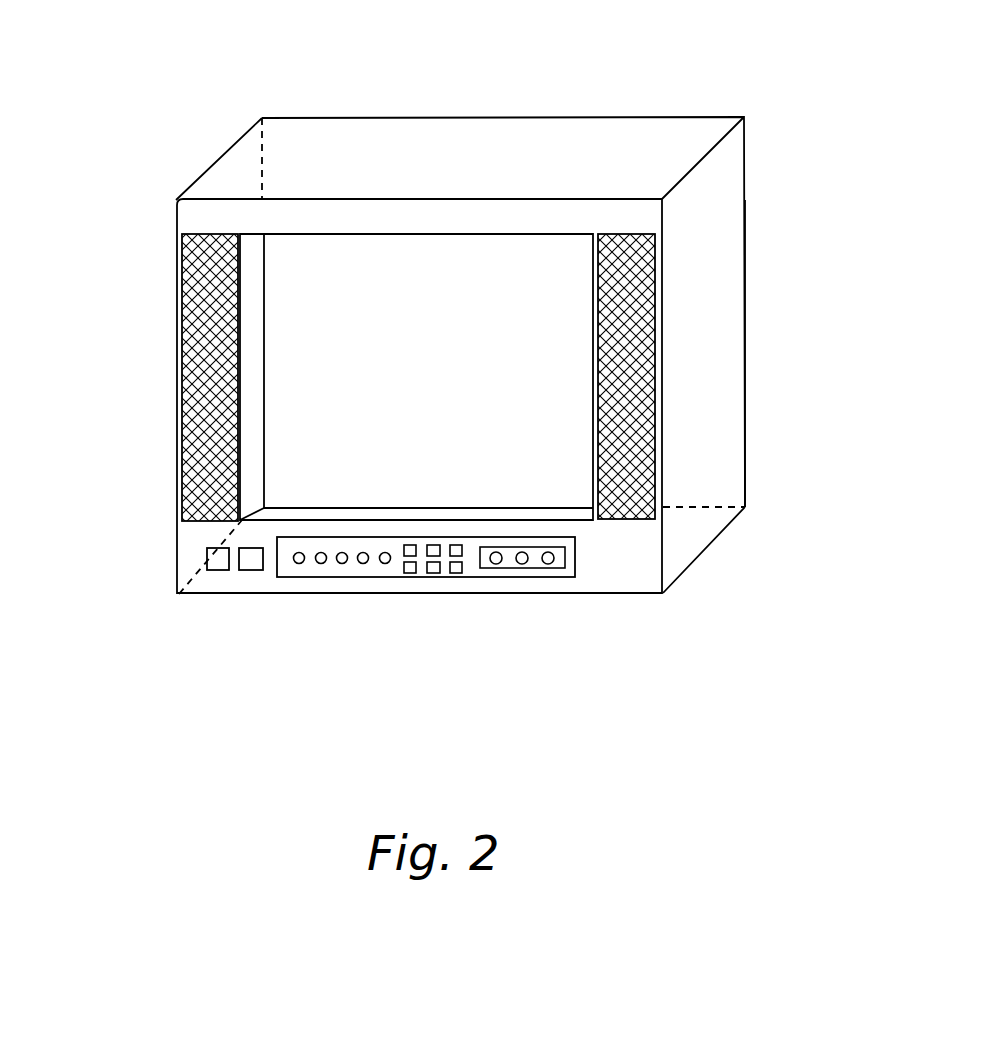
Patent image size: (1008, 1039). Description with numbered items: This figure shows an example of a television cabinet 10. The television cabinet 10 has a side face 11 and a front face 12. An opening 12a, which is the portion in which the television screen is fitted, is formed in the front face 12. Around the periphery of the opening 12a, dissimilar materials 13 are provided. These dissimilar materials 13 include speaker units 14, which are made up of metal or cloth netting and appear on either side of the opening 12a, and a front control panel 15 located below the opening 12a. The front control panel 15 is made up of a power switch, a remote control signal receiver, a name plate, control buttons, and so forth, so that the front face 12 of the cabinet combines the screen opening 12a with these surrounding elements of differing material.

The television cabinet 10 is at (158, 140).
The side face 11 is at (702, 252).
The front face 12 is at (238, 222).
The opening 12a is at (343, 383).
The dissimilar materials 13 is at (851, 468).
The speaker units 14 is at (208, 473).
The front control panel 15 is at (553, 575).